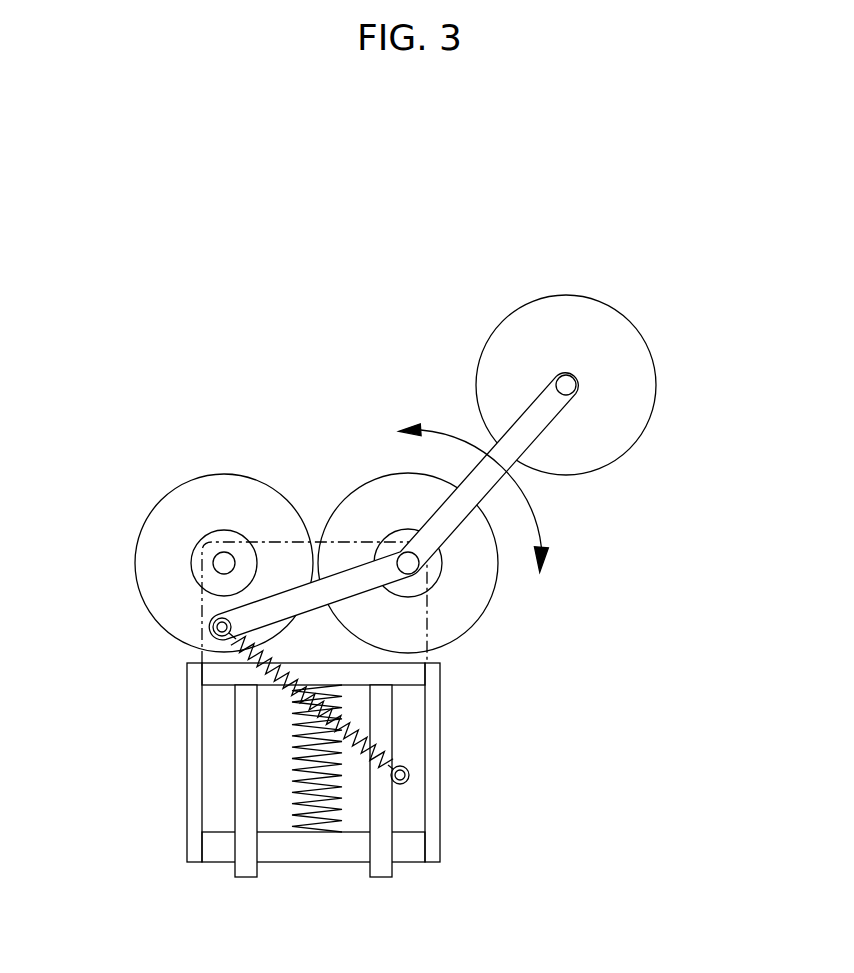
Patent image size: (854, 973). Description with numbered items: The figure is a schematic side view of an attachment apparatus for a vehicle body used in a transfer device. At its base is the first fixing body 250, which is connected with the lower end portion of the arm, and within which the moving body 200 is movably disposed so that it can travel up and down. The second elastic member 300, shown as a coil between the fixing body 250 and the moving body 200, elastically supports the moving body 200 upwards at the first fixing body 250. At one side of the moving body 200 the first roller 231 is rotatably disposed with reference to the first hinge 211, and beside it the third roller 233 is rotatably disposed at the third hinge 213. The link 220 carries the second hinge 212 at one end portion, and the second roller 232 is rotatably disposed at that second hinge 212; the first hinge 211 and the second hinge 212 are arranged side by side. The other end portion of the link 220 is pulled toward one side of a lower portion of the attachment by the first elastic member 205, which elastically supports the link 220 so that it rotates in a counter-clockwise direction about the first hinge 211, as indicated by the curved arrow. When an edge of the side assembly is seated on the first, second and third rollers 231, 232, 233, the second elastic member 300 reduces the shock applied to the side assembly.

The moving body 200 is at (202, 630).
The first elastic member 205 is at (387, 763).
The first hinge 211 is at (413, 565).
The second hinge 212 is at (568, 385).
The third hinge 213 is at (217, 567).
The link 220 is at (542, 425).
The first roller 231 is at (368, 495).
The second roller 232 is at (633, 350).
The third roller 233 is at (163, 518).
The first fixing body 250 is at (323, 855).
The second elastic member 300 is at (292, 762).